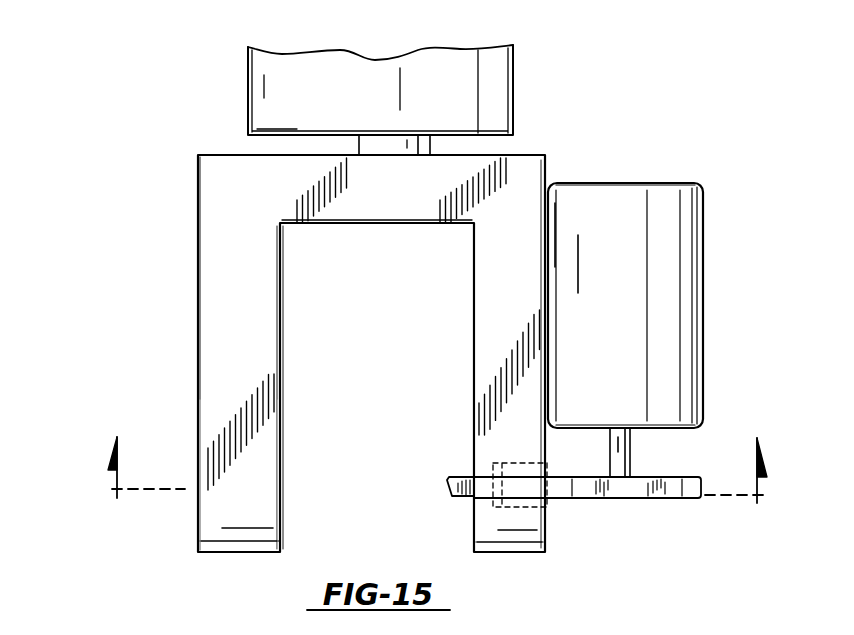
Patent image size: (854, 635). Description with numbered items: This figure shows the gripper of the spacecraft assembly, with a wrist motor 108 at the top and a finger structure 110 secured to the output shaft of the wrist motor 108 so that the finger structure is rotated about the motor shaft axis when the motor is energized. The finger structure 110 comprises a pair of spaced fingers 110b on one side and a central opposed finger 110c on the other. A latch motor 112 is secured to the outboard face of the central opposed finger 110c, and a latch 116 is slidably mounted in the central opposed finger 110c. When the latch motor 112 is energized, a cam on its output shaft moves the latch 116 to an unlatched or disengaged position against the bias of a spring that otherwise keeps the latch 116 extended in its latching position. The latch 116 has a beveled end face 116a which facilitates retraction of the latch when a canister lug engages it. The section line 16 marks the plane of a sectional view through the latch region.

The wrist motor 108 is at (495, 85).
The finger structure 110 is at (185, 198).
The spaced fingers 110b is at (197, 507).
The central opposed finger 110c is at (494, 283).
The latch motor 112 is at (690, 297).
The latch 116 is at (622, 490).
The beveled end face 116a is at (449, 486).
The section line 16- 16 is at (433, 470).